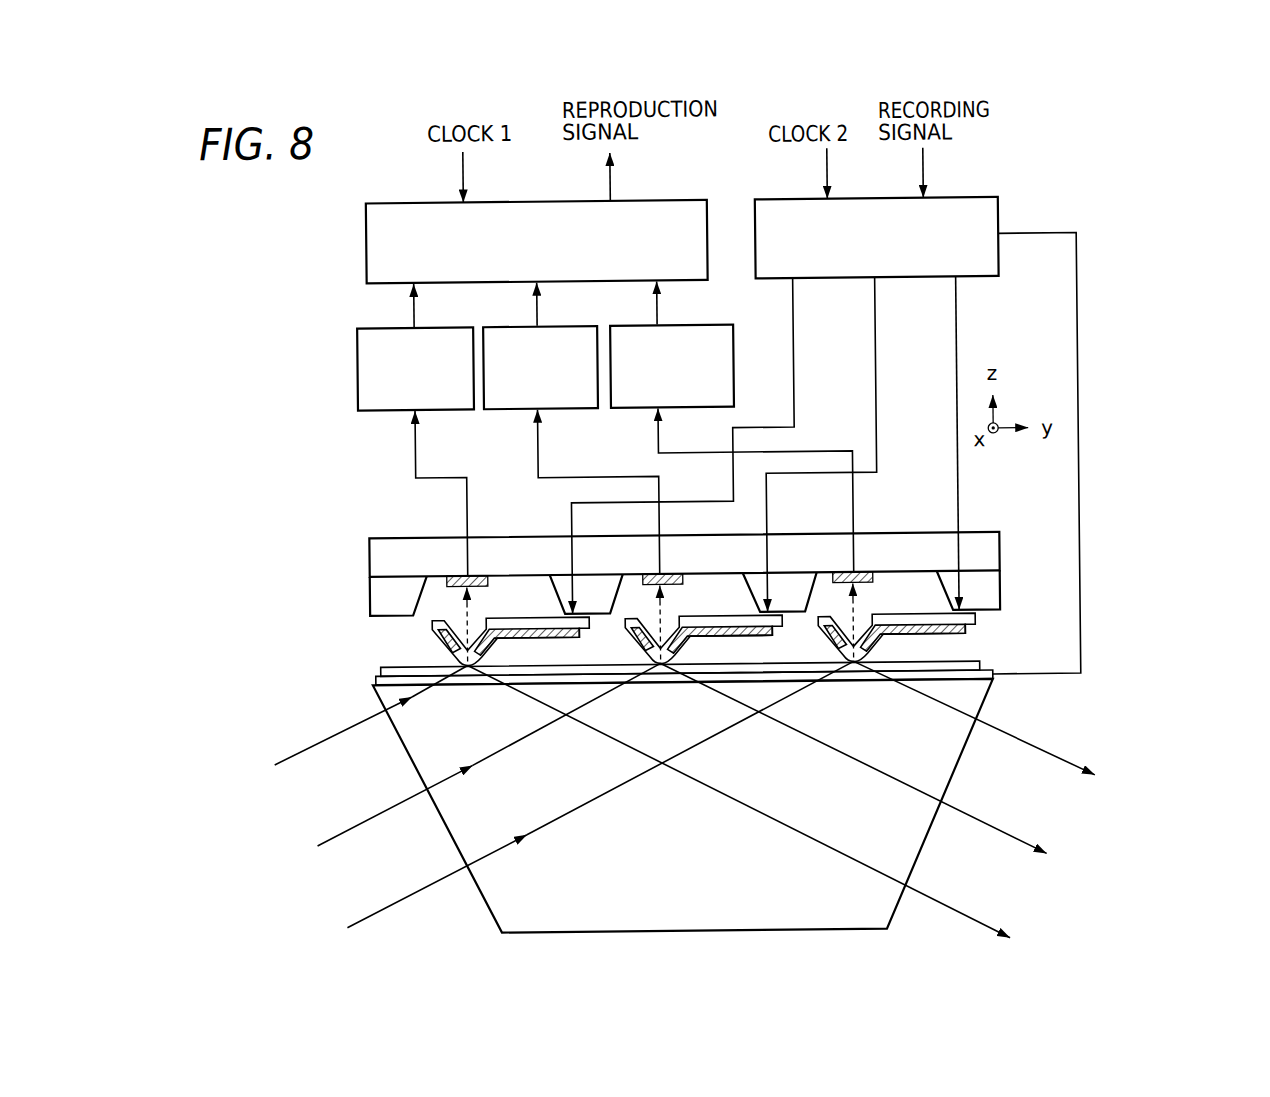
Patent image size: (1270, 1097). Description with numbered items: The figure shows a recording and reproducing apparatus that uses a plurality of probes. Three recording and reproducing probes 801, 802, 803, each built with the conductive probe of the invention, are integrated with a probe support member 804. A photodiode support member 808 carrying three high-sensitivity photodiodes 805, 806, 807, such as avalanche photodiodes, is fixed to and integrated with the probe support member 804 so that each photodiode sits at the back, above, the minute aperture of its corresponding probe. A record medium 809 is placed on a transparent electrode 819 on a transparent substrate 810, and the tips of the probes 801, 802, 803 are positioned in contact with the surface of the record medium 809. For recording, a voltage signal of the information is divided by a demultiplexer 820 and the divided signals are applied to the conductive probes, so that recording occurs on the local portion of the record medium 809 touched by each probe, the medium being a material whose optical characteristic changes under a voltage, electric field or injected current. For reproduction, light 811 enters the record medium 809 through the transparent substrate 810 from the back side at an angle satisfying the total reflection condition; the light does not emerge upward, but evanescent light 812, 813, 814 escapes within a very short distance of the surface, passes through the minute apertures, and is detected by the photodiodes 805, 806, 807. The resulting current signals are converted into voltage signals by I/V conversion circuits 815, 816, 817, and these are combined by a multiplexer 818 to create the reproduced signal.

The recording and reproducing probe 1 801 is at (441, 650).
The recording and reproducing probe 2 802 is at (637, 647).
The recording and reproducing probe 3 803 is at (835, 651).
The probe support member 804 is at (1003, 581).
The photodiode 1 805 is at (472, 573).
The photodiode 2 806 is at (662, 573).
The photodiode 3 807 is at (865, 574).
The photodiode support member 808 is at (1003, 541).
The record medium 809 is at (968, 668).
The transparent substrate 810 is at (744, 918).
The light 811 is at (350, 824).
The evanescent light 1 812 is at (462, 630).
The evanescent light 2 813 is at (653, 600).
The evanescent light 3 814 is at (857, 604).
The I/V conversion circuit 1 815 is at (438, 324).
The I/V conversion circuit 2 816 is at (560, 326).
The I/V conversion circuit 3 817 is at (690, 327).
The multiplexer 818 is at (659, 203).
The transparent electrode 819 is at (972, 683).
The demultiplexer 820 is at (966, 203).